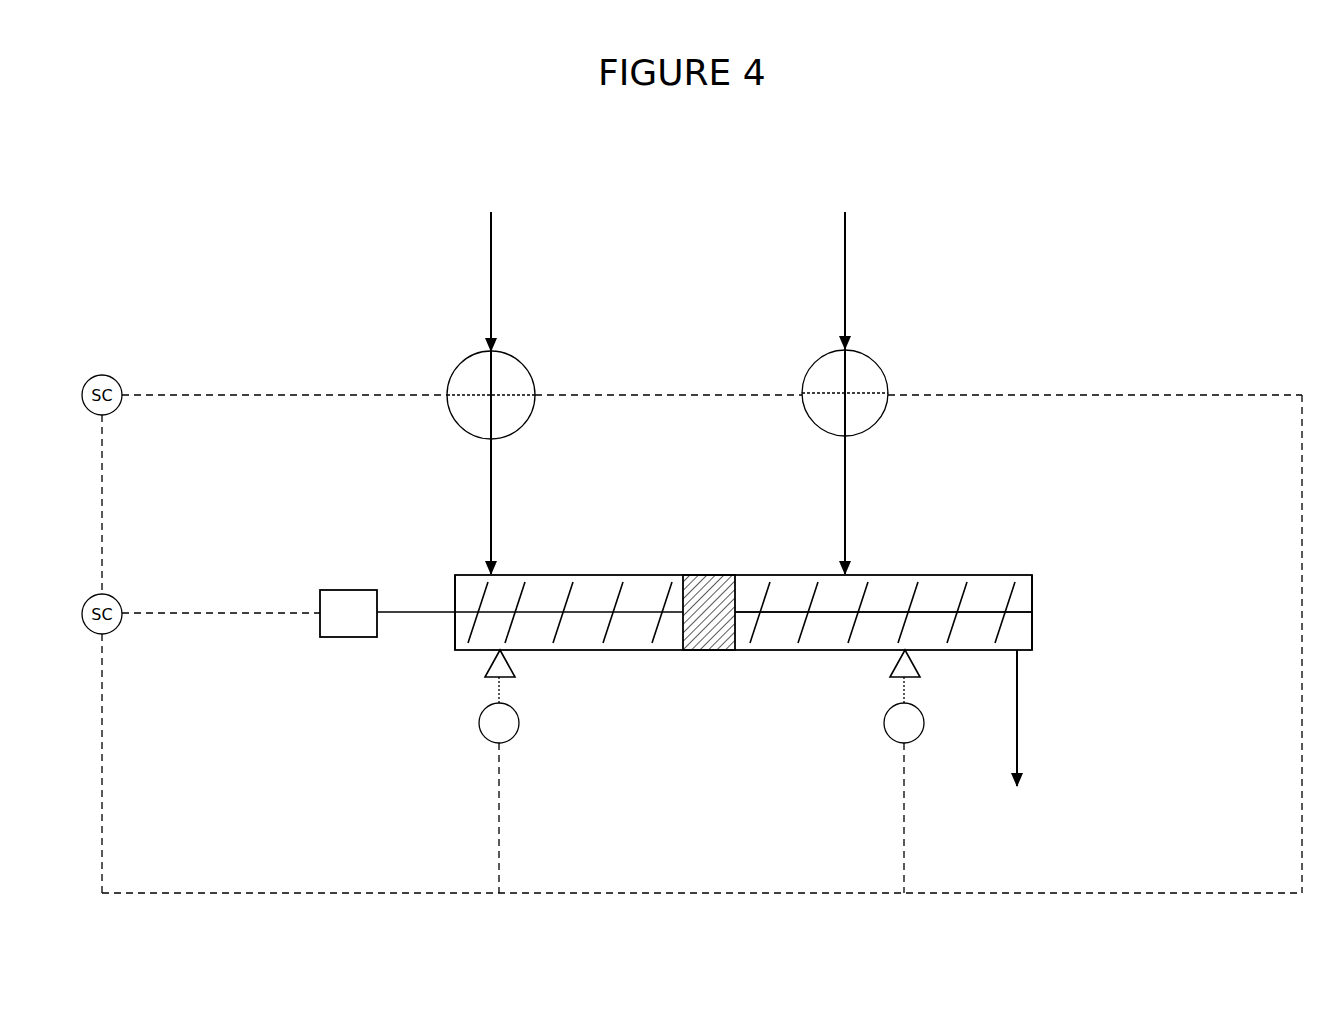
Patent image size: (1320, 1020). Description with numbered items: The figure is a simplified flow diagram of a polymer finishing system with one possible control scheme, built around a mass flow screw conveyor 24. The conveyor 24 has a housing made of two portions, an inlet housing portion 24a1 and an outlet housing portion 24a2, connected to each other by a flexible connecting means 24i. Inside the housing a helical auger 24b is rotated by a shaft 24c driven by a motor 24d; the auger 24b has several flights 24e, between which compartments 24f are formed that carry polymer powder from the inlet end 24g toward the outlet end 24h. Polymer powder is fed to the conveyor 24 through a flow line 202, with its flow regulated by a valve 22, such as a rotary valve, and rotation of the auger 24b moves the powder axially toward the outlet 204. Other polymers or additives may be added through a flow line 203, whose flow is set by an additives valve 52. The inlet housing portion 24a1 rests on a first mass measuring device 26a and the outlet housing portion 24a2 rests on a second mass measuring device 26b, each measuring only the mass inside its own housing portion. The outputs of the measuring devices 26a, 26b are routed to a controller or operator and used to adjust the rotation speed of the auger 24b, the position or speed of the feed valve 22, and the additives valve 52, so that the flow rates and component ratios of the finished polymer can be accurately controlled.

The valve 22 is at (536, 368).
The additives valve 52 is at (889, 366).
The flow line 202 is at (490, 497).
The flow line 203 is at (857, 500).
The outlet 204 is at (1018, 737).
The mass flow screw conveyor 24 is at (1035, 560).
The inlet housing portion 24a1 is at (636, 651).
The outlet housing portion 24a2 is at (810, 575).
The helical auger 24b is at (833, 620).
The shaft 24c is at (440, 612).
The motor 24d is at (318, 615).
The flights 24e is at (613, 605).
The compartments 24f is at (771, 633).
The inlet end 24g is at (434, 571).
The outlet end 24h is at (1044, 631).
The flexible connecting means 24i is at (705, 596).
The first mass measuring device 26a is at (492, 741).
The second mass measuring device 26b is at (892, 741).